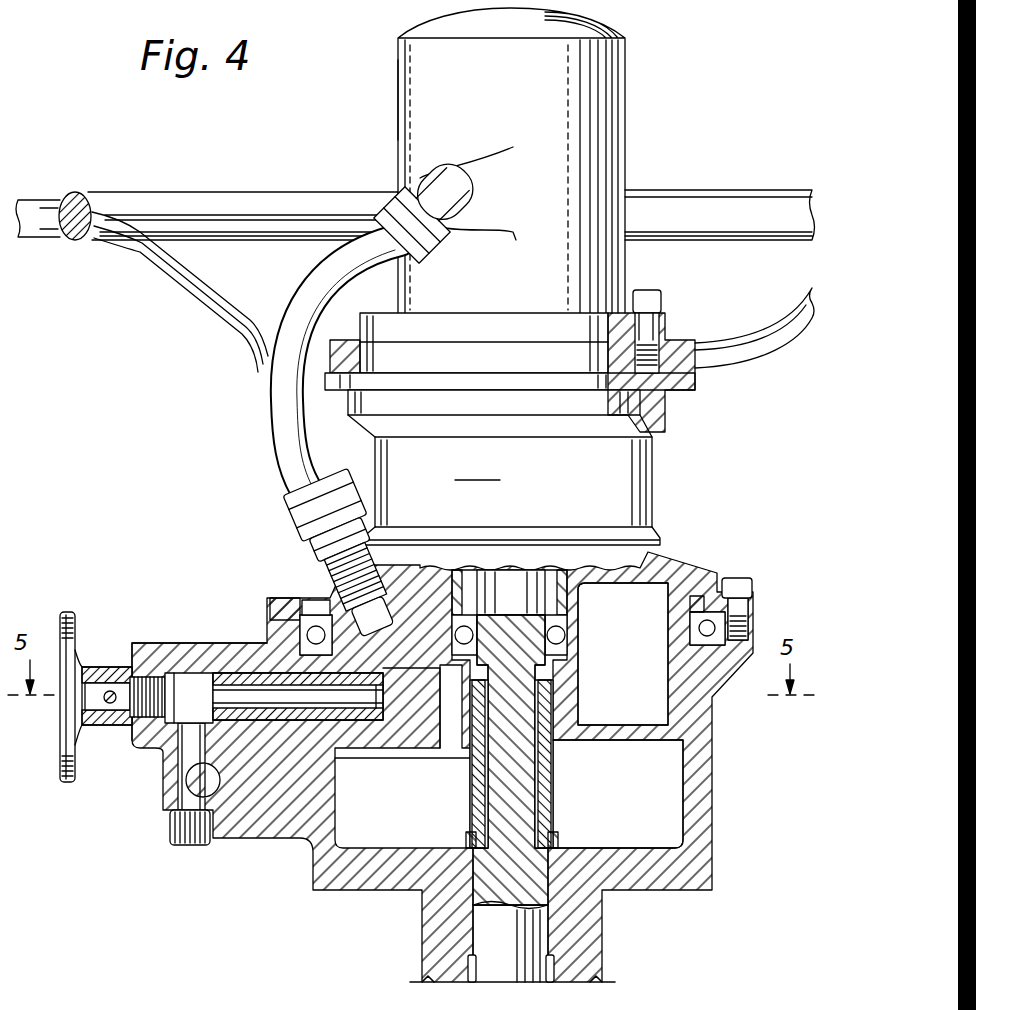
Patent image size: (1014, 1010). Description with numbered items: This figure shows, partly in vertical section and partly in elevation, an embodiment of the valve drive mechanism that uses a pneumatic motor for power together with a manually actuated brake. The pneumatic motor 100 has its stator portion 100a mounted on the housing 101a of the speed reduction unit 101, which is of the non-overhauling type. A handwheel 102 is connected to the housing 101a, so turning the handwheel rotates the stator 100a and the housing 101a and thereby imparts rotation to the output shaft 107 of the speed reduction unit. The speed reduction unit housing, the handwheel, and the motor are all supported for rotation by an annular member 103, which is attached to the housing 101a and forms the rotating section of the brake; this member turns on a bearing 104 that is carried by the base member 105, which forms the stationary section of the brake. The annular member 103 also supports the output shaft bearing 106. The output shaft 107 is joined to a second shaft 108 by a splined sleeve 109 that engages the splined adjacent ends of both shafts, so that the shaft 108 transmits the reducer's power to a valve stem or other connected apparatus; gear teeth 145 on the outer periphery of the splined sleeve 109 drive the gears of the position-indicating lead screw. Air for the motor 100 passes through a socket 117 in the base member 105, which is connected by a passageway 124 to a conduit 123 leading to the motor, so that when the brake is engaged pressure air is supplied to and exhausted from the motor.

The pneumatic motor 100 is at (638, 98).
The stator portion 100a is at (398, 102).
The speed reduction unit 101 is at (655, 466).
The housing of speed reduction unit 101a is at (477, 469).
The handwheel 102 is at (257, 181).
The annular member 103 is at (686, 560).
The bearing 104 is at (295, 582).
The base member 105 is at (232, 642).
The output shaft bearing 106 is at (585, 632).
The output shaft 107 is at (552, 680).
The shaft 108 is at (556, 868).
The splined sleeve 109 is at (556, 792).
The socket 117 is at (388, 748).
The conduit 123 is at (270, 413).
The passageway 124 is at (376, 602).
The gear teeth 145 is at (468, 832).